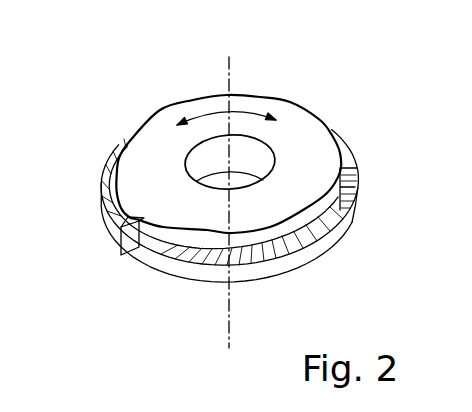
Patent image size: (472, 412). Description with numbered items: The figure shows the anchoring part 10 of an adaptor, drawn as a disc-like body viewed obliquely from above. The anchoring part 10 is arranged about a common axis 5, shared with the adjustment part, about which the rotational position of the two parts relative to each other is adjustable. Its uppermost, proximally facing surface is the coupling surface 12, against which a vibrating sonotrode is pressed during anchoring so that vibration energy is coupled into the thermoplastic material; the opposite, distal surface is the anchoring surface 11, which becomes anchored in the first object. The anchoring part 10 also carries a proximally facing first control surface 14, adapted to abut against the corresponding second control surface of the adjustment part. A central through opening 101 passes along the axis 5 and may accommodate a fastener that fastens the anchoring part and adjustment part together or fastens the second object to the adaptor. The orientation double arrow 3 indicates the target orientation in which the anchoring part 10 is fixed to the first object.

The anchoring part 10 is at (113, 275).
The anchoring surface 11 is at (318, 262).
The coupling surface 12 is at (160, 162).
The first control surface 14 is at (347, 229).
The central through opening 101 is at (235, 171).
The orientation double arrow 3 is at (242, 110).
The axis 5 is at (231, 330).